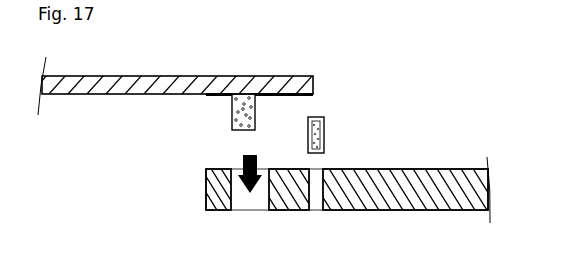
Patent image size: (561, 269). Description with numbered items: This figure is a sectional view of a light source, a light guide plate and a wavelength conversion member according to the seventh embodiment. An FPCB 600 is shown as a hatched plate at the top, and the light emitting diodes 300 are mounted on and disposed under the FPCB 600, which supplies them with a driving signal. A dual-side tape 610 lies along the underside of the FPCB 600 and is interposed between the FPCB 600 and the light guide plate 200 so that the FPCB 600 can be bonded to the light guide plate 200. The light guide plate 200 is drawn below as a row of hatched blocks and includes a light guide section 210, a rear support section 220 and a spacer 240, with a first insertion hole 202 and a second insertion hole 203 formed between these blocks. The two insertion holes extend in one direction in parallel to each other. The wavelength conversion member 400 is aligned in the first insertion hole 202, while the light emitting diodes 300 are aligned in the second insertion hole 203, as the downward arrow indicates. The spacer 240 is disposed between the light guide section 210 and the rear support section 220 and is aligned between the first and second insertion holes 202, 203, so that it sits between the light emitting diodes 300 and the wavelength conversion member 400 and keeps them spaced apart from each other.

The FPCB 600 is at (257, 82).
The dual-side tape 610 is at (217, 93).
The light emitting diodes 300 is at (232, 118).
The wavelength conversion member 400 is at (345, 139).
The light guide plate 200 is at (315, 206).
The rear support section 220 is at (217, 210).
The second insertion hole 203 is at (252, 199).
The spacer 240 is at (292, 205).
The first insertion hole 202 is at (311, 199).
The light guide section 210 is at (403, 210).